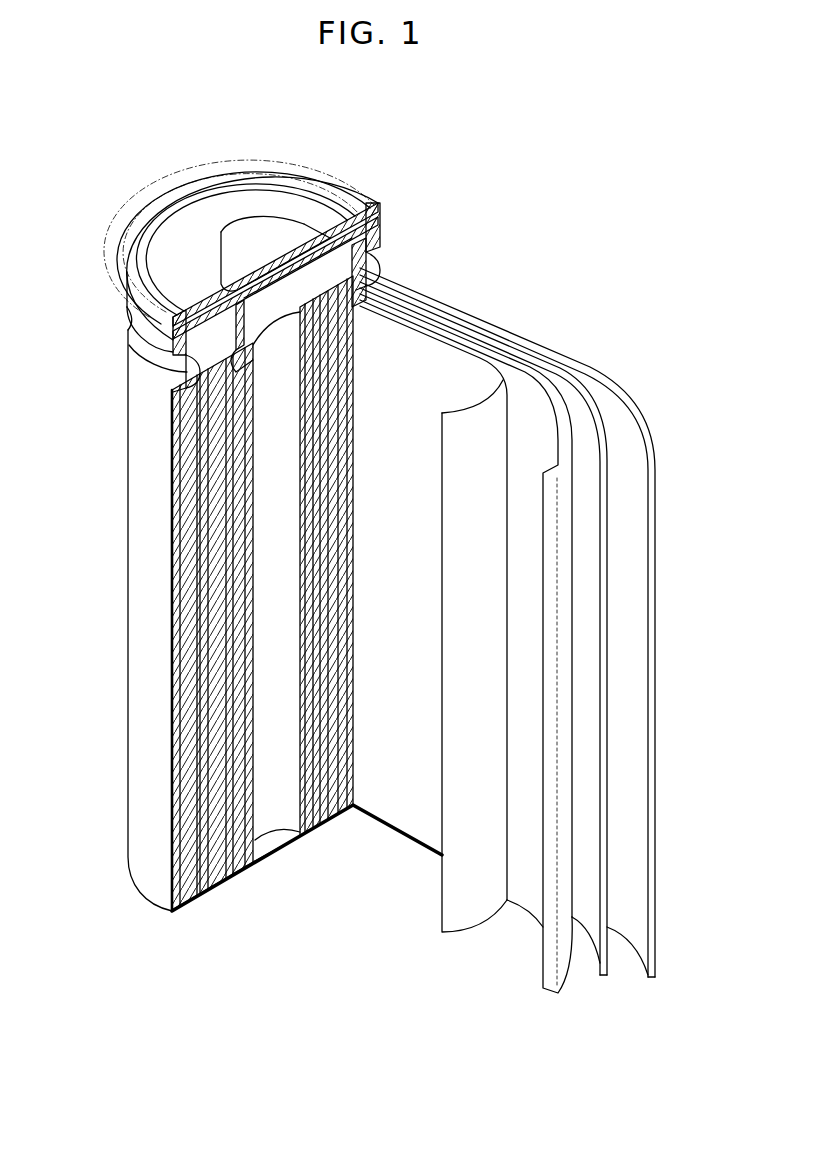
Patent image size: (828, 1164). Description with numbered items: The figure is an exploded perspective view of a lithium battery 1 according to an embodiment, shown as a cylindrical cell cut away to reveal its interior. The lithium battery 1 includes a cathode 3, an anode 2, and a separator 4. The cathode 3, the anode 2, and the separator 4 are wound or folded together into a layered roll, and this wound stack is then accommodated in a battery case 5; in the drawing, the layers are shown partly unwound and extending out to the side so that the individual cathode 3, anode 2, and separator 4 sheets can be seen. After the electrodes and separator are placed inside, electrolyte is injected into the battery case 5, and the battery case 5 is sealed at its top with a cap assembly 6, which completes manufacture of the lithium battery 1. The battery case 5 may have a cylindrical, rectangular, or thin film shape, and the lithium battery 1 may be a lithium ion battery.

The lithium battery 1 is at (575, 202).
The anode 2 is at (643, 442).
The cathode 3 is at (532, 387).
The separator 4 is at (450, 333).
The battery case 5 is at (140, 585).
The cap assembly 6 is at (250, 218).